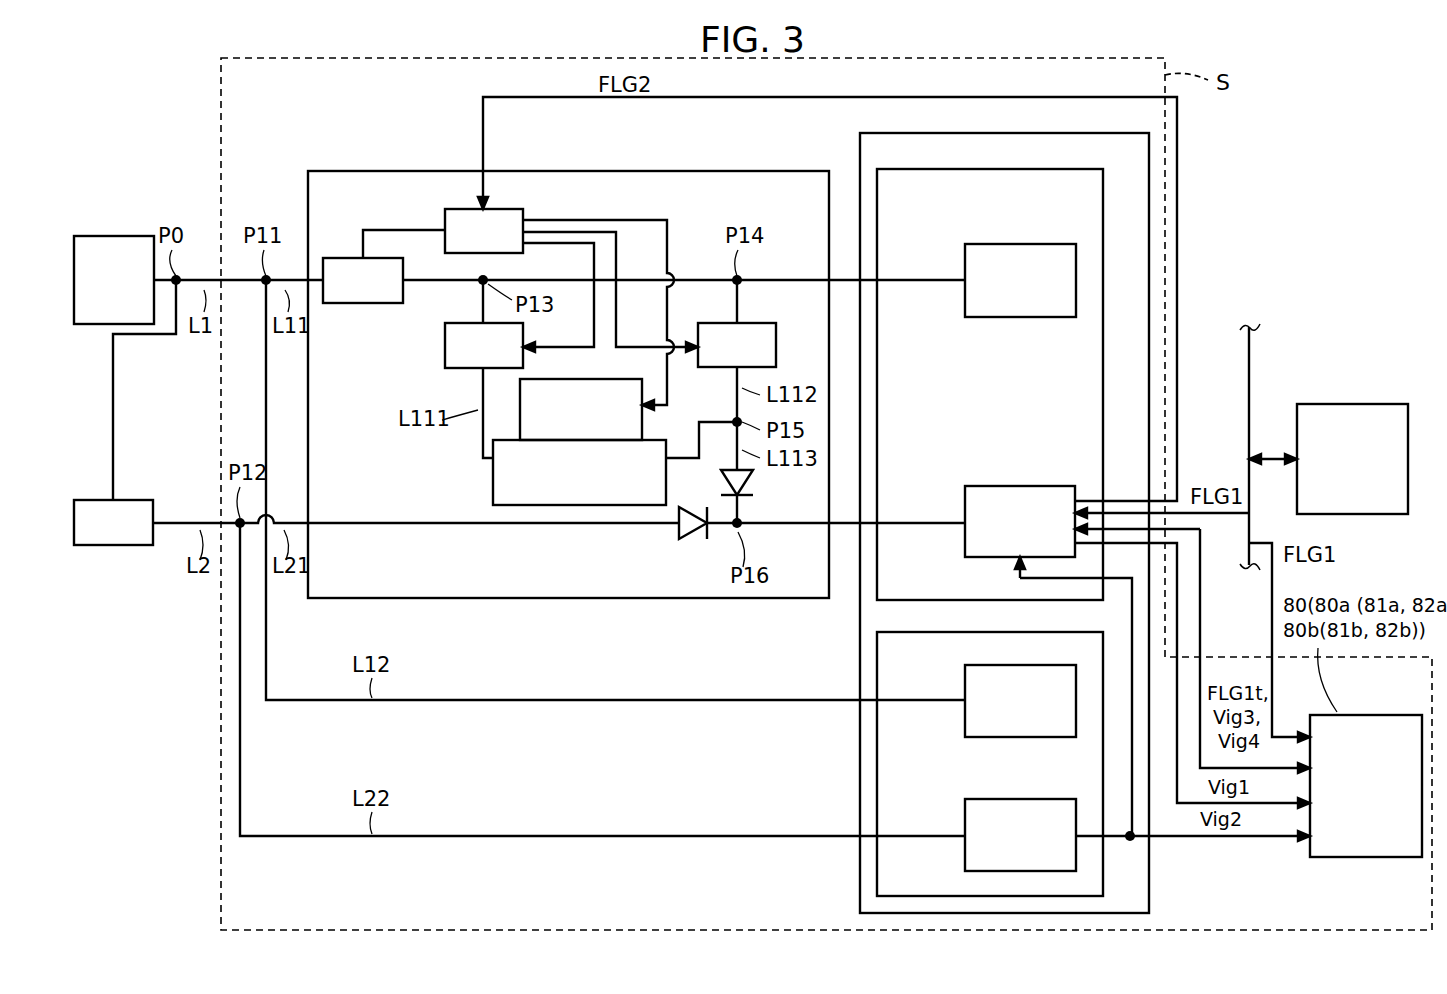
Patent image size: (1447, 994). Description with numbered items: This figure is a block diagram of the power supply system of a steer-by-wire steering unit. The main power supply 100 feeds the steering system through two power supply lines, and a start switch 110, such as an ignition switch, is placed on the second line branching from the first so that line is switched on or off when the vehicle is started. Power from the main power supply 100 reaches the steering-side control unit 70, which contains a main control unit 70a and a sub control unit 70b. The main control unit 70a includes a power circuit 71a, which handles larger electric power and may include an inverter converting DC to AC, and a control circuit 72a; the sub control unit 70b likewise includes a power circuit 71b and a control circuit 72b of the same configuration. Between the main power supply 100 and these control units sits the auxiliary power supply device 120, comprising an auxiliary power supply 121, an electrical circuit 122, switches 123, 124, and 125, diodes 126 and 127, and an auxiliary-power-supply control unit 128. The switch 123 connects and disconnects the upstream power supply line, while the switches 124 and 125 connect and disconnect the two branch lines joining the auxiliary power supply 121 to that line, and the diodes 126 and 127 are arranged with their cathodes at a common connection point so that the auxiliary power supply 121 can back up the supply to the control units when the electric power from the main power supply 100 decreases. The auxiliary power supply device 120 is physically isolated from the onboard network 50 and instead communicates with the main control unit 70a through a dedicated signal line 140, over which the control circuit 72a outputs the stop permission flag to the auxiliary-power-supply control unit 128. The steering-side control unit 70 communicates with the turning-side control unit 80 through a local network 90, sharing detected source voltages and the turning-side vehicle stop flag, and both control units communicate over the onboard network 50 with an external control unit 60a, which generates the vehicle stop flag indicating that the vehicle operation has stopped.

The main power supply 100 is at (118, 236).
The start switch 110 is at (113, 545).
The auxiliary power supply device 120 is at (773, 170).
The auxiliary power supply 121 is at (492, 482).
The electrical circuit 122 is at (571, 379).
The switch 123 is at (346, 258).
The switch 124 is at (445, 347).
The switch 125 is at (752, 323).
The diode 126 is at (755, 480).
The diode 127 is at (693, 540).
The auxiliary-power-supply control unit 128 is at (505, 208).
The signal line 140 is at (1045, 98).
The steering-side control unit 70 is at (1020, 133).
The main control unit 70a is at (983, 169).
The sub control unit 70b is at (983, 632).
The power circuit 71a is at (983, 244).
The power circuit 71b is at (983, 665).
The control circuit 72a is at (983, 486).
The control circuit 72b is at (983, 799).
The onboard network 50 is at (1252, 342).
The external control unit 60a is at (1340, 404).
The turning-side control unit 80 is at (1366, 786).
The local network 90 is at (1283, 772).